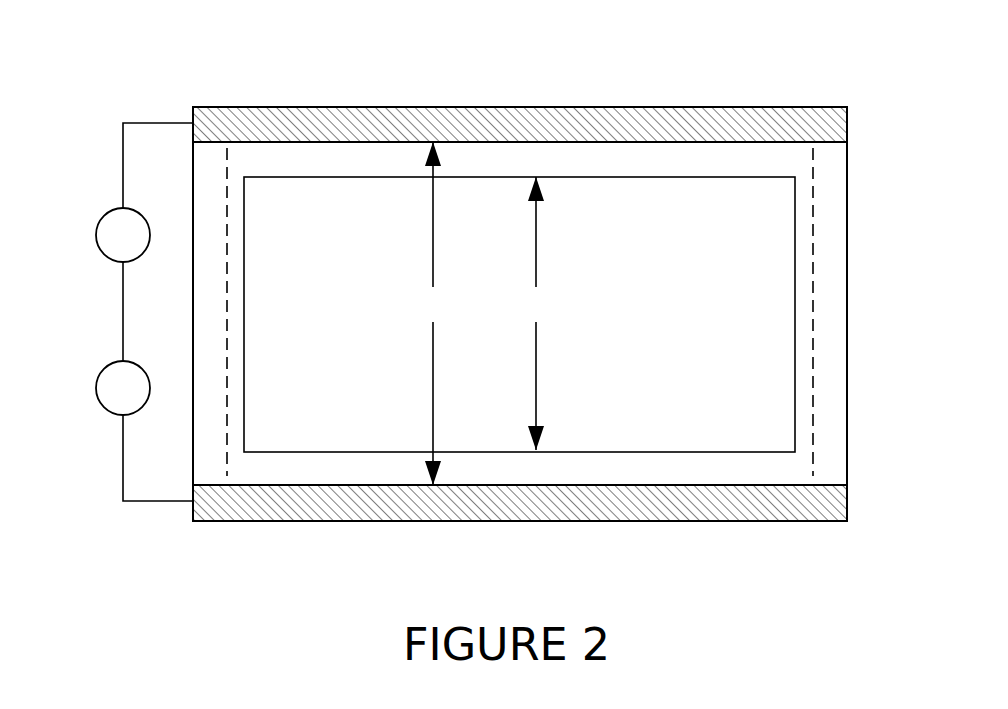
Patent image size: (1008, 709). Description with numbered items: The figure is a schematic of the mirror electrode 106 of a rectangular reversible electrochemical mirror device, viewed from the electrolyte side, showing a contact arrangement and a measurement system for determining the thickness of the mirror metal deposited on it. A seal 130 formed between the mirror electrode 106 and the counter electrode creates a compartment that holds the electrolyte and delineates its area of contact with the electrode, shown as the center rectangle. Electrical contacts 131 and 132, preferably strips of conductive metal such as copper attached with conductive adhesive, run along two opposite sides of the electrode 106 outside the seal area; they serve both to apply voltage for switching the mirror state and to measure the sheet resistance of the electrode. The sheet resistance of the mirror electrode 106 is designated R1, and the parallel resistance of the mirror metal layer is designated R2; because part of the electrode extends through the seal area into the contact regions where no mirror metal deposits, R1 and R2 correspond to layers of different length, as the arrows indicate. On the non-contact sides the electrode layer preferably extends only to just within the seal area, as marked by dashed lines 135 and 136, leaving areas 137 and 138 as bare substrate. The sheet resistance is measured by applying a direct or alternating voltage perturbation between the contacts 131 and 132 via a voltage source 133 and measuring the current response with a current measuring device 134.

The mirror electrode 106 is at (487, 210).
The seal 130 is at (672, 163).
The electrical contact 131 is at (837, 505).
The electrical contact 132 is at (840, 130).
The voltage source 133 is at (107, 212).
The current measuring device 134 is at (97, 388).
The dashed line 135 is at (227, 163).
The dashed line 136 is at (812, 165).
The bare substrate area 137 is at (833, 240).
The bare substrate area 138 is at (207, 210).
The sheet resistance of mirror electrode R1 is at (431, 313).
The parallel resistance of mirror metal layer R2 is at (532, 313).